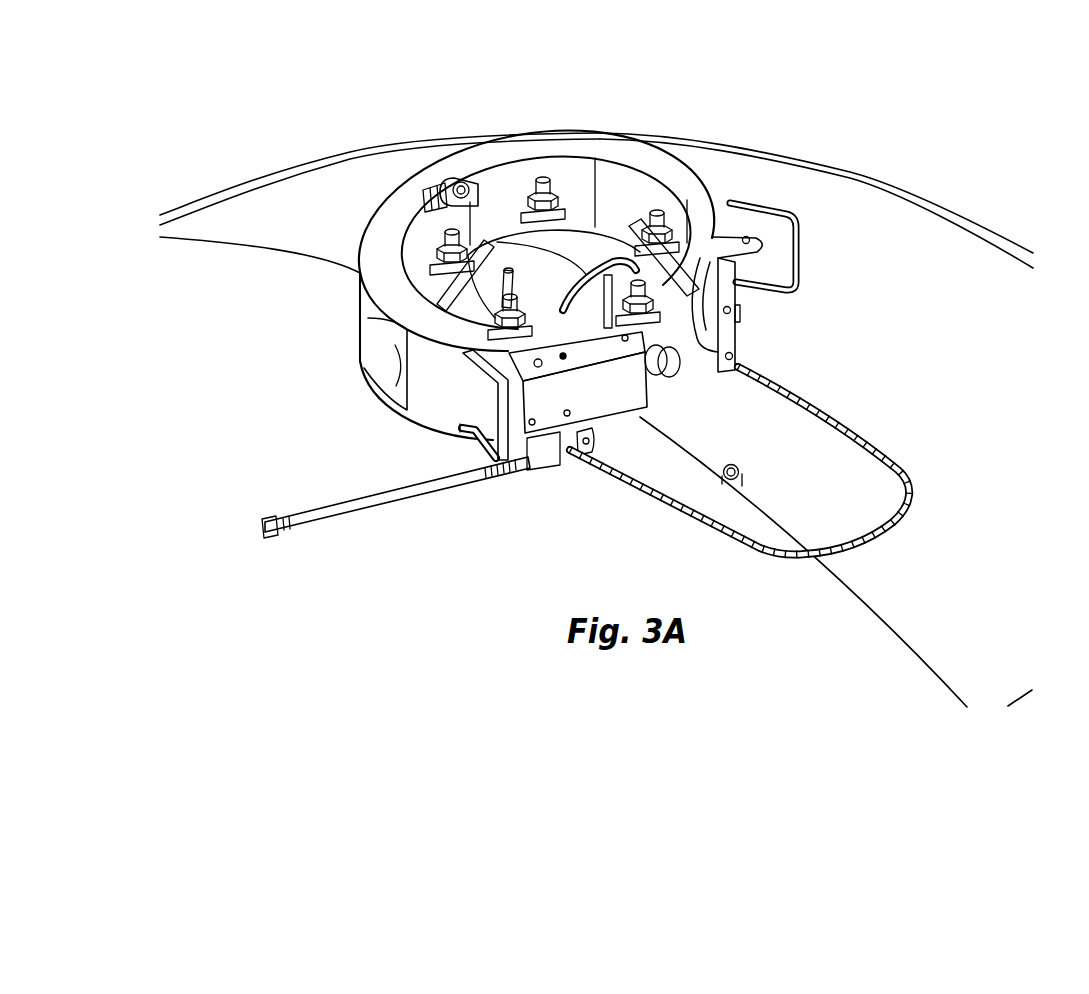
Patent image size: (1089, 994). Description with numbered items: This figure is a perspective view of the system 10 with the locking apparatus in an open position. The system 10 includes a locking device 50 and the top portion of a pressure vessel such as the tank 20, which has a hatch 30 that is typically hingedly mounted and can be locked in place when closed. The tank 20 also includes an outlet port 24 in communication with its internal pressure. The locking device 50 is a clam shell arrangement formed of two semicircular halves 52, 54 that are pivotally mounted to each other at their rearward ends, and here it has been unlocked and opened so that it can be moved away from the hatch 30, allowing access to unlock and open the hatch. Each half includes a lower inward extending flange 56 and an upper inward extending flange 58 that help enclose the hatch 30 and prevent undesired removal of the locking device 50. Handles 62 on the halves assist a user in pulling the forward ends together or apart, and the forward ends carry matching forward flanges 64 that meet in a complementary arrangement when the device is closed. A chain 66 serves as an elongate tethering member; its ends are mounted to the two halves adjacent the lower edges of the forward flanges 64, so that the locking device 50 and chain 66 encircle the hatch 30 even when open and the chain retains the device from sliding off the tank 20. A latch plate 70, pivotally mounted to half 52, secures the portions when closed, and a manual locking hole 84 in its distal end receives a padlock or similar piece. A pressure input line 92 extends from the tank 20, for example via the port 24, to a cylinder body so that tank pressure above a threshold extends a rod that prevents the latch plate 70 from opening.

The system 10 is at (942, 152).
The tank 20 is at (955, 292).
The outlet port 24 is at (742, 463).
The hatch 30 is at (522, 238).
The locking device 50 is at (620, 103).
The semicircular half 52 is at (361, 270).
The semicircular half 54 is at (672, 163).
The lower inward extending flange 56 is at (362, 374).
The upper inward extending flange 58 is at (401, 222).
The handle 62 is at (797, 257).
The forward flange 64 is at (732, 330).
The chain 66 is at (742, 556).
The latch plate 70 is at (598, 398).
The manual locking hole 84 is at (642, 378).
The pressure input line 92 is at (375, 506).